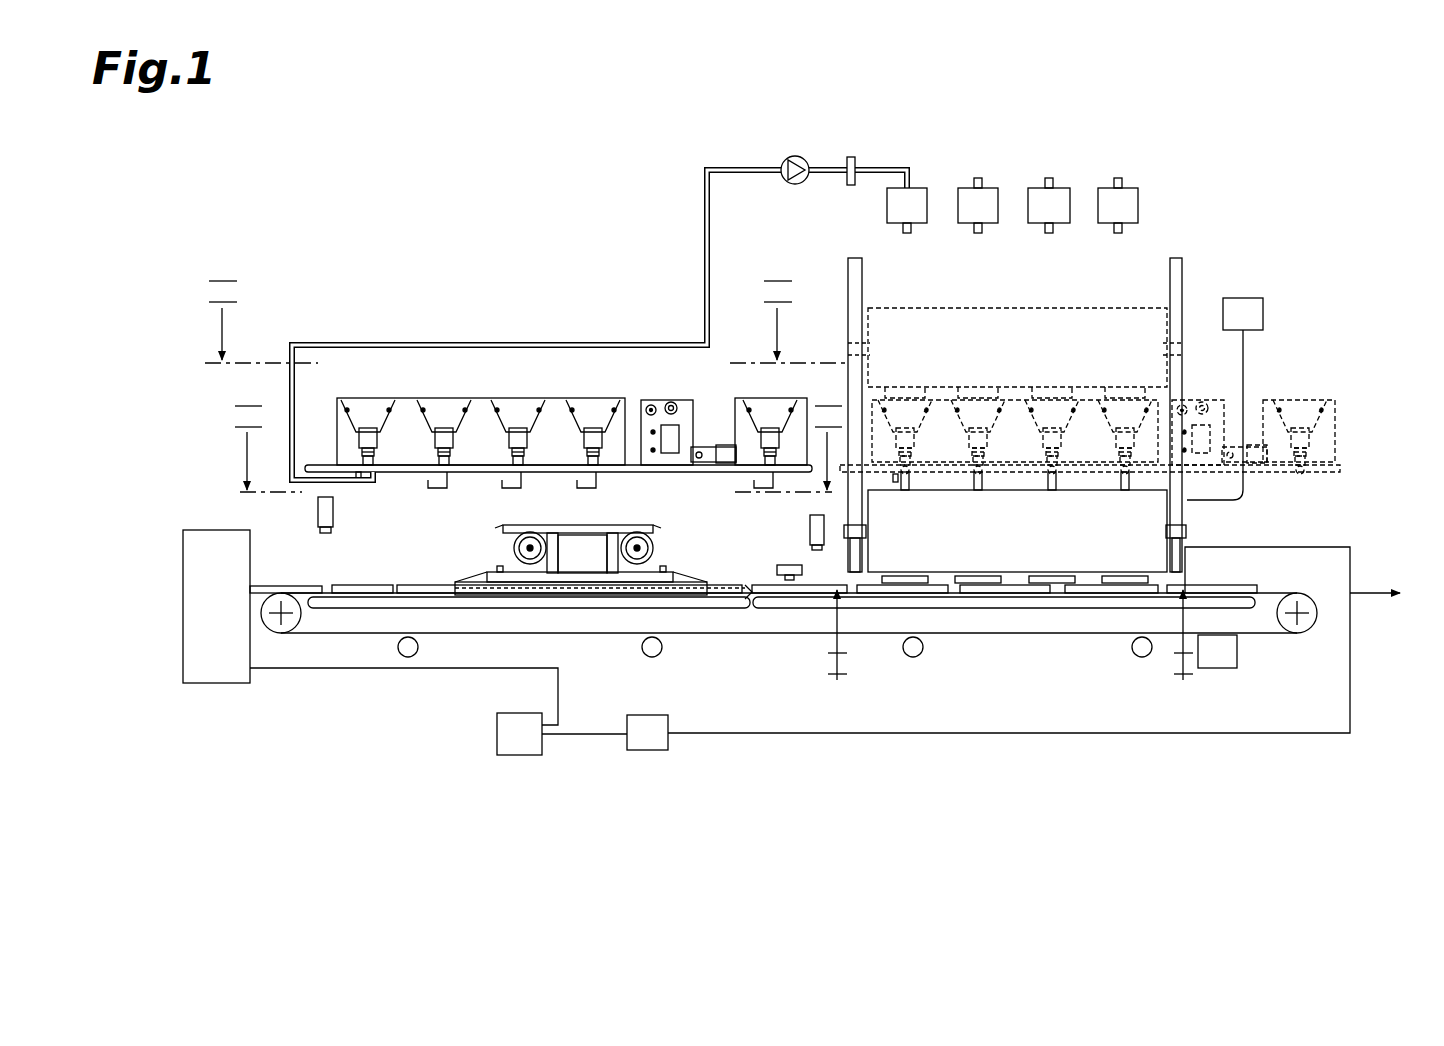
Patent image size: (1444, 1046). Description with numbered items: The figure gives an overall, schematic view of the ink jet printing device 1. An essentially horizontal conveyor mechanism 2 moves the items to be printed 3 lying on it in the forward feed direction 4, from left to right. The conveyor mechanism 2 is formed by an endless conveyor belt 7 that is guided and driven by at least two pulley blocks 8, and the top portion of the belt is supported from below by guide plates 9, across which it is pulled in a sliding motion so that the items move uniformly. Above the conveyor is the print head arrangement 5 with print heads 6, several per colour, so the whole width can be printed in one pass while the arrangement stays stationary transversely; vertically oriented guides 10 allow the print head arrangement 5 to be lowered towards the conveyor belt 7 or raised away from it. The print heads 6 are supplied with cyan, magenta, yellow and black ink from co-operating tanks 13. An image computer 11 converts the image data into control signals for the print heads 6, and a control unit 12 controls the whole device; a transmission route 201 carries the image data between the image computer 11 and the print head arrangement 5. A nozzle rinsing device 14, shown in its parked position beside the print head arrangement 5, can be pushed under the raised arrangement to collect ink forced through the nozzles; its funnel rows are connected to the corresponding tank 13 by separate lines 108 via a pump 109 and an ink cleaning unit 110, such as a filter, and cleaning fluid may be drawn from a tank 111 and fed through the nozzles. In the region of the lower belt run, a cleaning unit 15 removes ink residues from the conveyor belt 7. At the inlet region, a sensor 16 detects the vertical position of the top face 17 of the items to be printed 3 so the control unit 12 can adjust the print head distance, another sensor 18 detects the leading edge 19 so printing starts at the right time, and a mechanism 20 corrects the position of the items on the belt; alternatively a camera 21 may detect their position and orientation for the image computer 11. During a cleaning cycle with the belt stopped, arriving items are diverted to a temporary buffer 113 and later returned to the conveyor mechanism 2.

The ink jet printing device 1 is at (338, 223).
The conveyor mechanism 2 is at (338, 647).
The items to be printed 3 is at (385, 580).
The forward feed direction 4 is at (1380, 590).
The print head arrangement 5 is at (1130, 513).
The print heads 6 is at (900, 590).
The endless conveyor belt 7 is at (375, 642).
The pulley blocks 8 is at (270, 636).
The guide plates 9 is at (443, 612).
The vertically oriented guides 10 is at (840, 270).
The image computer 11 is at (643, 757).
The control unit 12 is at (522, 760).
The tanks 13 is at (927, 178).
The nozzle rinsing device 14 is at (440, 382).
The cleaning unit 15 is at (1213, 671).
The sensor 16 is at (780, 562).
The top face 17 is at (766, 580).
The sensor 18 is at (814, 552).
The leading edge 19 is at (750, 592).
The mechanism for correcting the position 20 is at (496, 532).
The camera 21 is at (305, 515).
The lines 108 is at (690, 292).
The pump 109 is at (806, 153).
The ink cleaning unit 110 is at (861, 149).
The tank 111 is at (1266, 297).
The temporary buffer 113 is at (178, 600).
The transmission route 201 is at (832, 741).